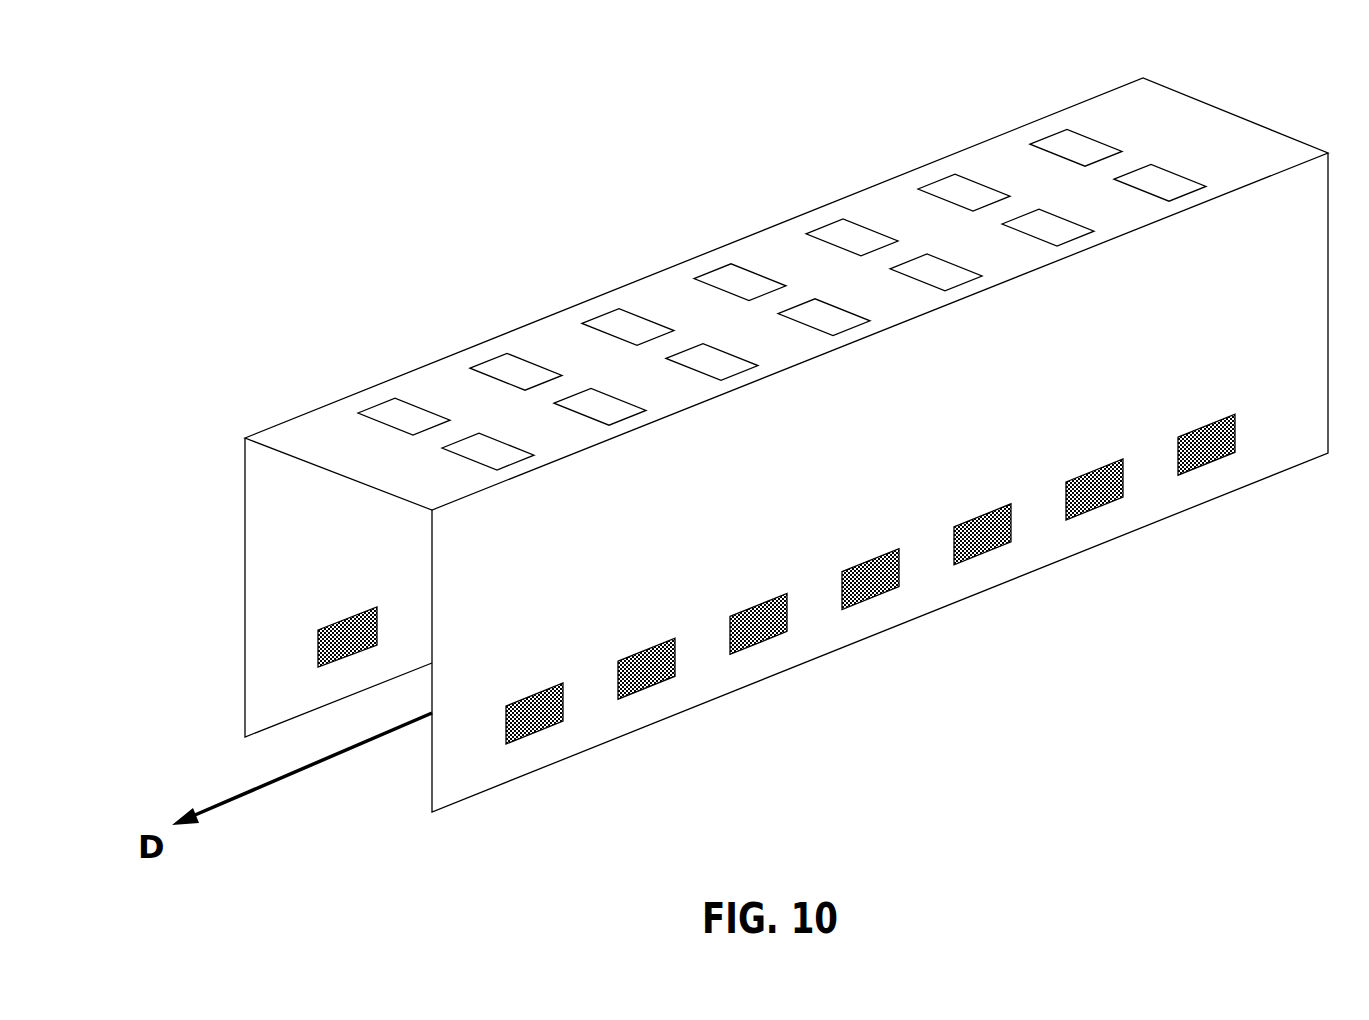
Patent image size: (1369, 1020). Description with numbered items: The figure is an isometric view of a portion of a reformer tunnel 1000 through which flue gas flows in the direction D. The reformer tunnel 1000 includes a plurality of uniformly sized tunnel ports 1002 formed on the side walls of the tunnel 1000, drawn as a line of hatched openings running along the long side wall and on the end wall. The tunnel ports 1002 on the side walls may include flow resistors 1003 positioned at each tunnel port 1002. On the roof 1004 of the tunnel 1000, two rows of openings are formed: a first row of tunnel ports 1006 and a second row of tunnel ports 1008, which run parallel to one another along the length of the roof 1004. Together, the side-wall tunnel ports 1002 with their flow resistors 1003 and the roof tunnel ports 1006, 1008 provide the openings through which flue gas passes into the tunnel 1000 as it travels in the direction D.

The reformer tunnel 1000 is at (786, 412).
The tunnel ports 1002 is at (648, 650).
The flow resistors 1003 is at (757, 617).
The roof 1004 is at (317, 435).
The first row of tunnel ports 1006 is at (1082, 128).
The second row of tunnel ports 1008 is at (1170, 168).